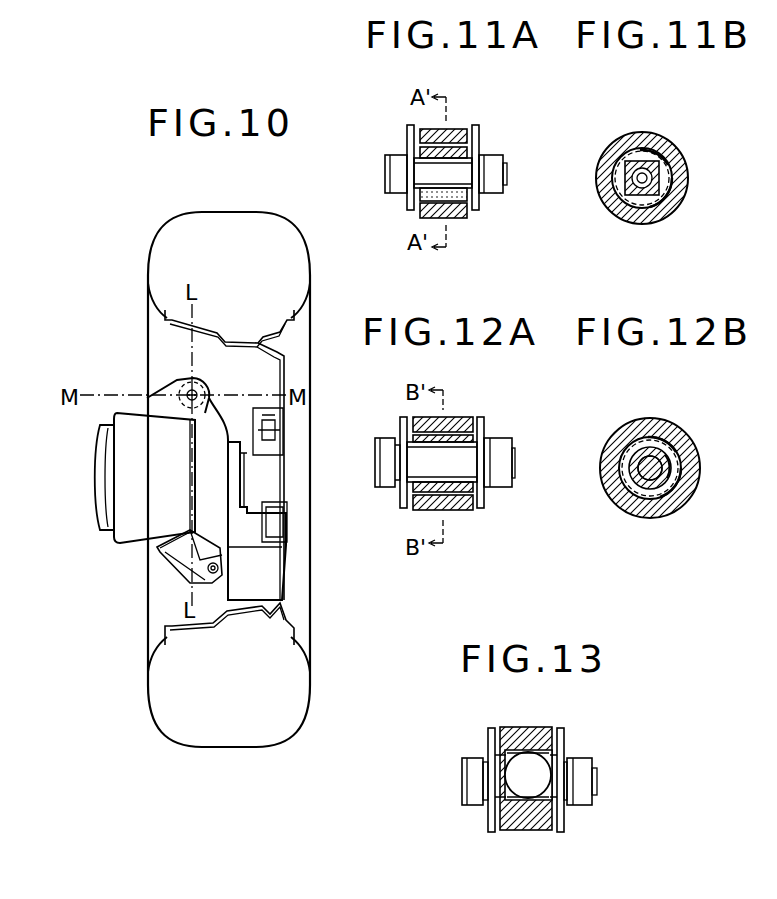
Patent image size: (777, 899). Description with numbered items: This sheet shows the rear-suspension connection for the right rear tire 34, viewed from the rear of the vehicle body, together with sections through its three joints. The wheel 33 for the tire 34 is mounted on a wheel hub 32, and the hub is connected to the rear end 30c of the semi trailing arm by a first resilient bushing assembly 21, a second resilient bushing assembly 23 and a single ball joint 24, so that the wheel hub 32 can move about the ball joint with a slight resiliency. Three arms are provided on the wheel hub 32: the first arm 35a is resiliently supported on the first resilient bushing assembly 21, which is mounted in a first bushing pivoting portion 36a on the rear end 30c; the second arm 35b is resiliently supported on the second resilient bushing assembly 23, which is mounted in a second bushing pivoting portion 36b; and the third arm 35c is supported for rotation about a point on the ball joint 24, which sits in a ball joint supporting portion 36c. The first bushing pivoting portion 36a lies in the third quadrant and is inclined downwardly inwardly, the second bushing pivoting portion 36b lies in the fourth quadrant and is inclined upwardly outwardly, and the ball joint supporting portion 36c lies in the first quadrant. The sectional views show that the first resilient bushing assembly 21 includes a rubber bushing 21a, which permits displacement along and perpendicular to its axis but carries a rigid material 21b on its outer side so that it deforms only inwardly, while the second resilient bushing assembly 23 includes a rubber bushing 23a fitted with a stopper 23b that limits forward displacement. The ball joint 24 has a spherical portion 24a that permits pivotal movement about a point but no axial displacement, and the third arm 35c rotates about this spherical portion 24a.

In FIG. 10, the right rear tire 34 is at (278, 212).
In FIG. 10, the third arm 35c is at (212, 392).
In FIG. 13, the third arm 35c is at (538, 831).
In FIG. 10, the ball joint 24 is at (176, 380).
In FIG. 10, the wheel hub 32 is at (209, 430).
In FIG. 10, the rear end of the semi trailing arm 30c is at (130, 493).
In FIG. 10, the wheel 33 is at (262, 558).
In FIG. 10, the second resilient bushing assembly 23 is at (220, 570).
In FIG. 11A, the rubber bushing 21a is at (420, 150).
In FIG. 11A, the first arm 35a is at (446, 130).
In FIG. 11B, the first arm 35a is at (665, 150).
In FIG. 11A, the first bushing pivoting portion 36a is at (478, 145).
In FIG. 11B, the first resilient bushing assembly 21 is at (622, 152).
In FIG. 11B, the rigid material 21b is at (650, 215).
In FIG. 12A, the second bushing pivoting portion 36b is at (484, 426).
In FIG. 12A, the rubber bushing 23a is at (418, 496).
In FIG. 12B, the rubber bushing 23a is at (628, 445).
In FIG. 12A, the stopper 23b is at (474, 498).
In FIG. 12A, the second arm 35b is at (455, 506).
In FIG. 12B, the second arm 35b is at (678, 505).
In FIG. 13, the ball joint supporting portion 36c is at (570, 746).
In FIG. 13, the spherical portion 24a is at (521, 831).